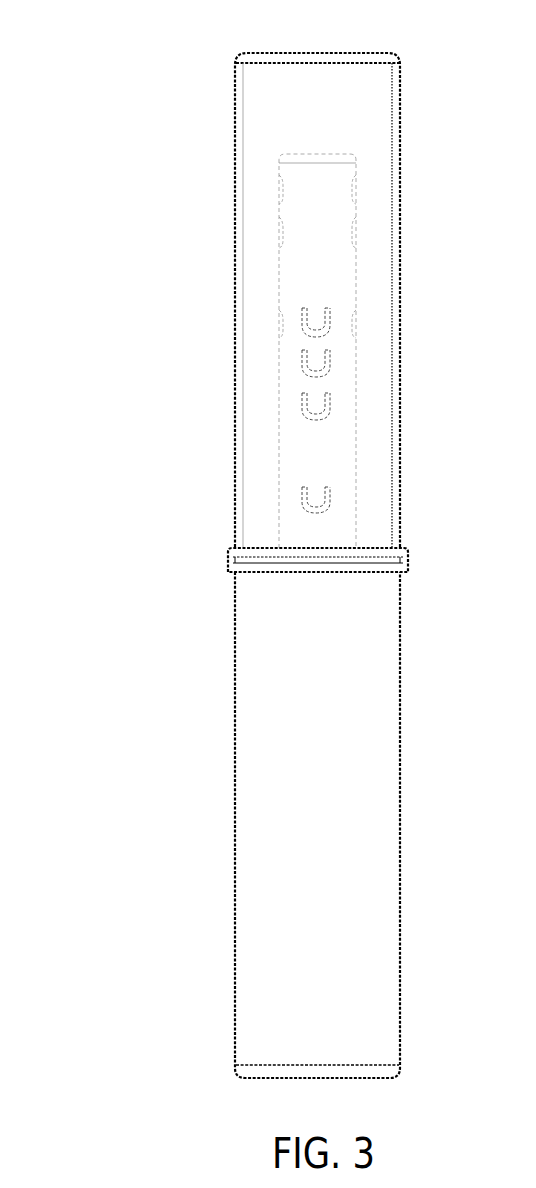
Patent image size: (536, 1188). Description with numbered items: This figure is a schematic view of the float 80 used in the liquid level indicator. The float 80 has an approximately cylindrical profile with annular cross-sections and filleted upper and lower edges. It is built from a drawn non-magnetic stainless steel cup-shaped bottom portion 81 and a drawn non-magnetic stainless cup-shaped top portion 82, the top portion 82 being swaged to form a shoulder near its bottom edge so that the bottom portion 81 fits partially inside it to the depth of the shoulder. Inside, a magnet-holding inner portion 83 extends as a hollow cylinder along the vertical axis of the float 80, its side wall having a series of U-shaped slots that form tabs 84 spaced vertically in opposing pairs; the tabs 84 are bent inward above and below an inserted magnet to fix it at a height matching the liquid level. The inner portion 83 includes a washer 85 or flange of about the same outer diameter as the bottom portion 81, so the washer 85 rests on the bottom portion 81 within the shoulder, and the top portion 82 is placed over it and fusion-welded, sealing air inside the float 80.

The float 80 is at (82, 87).
The bottom portion 81 is at (400, 801).
The top portion 82 is at (400, 218).
The magnet-holding inner portion 83 is at (342, 450).
The tabs 84 is at (330, 322).
The washer 85 is at (408, 560).